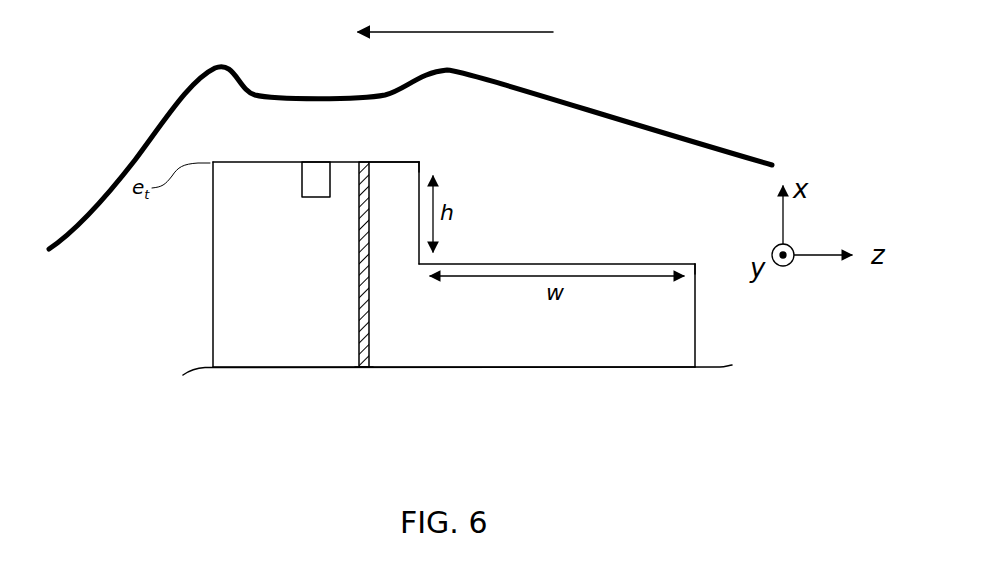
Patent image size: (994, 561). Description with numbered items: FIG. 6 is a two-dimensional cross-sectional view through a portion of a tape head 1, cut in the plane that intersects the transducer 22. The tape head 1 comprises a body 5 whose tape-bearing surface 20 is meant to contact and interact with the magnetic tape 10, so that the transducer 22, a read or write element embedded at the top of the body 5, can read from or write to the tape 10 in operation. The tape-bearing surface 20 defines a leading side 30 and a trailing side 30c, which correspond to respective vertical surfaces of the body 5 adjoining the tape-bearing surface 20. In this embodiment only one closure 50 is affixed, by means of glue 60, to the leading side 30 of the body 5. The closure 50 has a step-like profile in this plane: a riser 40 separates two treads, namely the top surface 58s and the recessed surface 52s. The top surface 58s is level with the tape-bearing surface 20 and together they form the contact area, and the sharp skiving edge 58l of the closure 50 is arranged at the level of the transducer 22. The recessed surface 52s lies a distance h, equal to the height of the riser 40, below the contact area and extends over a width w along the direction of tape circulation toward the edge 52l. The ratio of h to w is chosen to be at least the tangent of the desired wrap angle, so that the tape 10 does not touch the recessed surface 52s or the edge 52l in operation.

The tape head 1 is at (665, 413).
The body 5 is at (267, 372).
The tape 10 is at (612, 110).
The tape-bearing surface 20 is at (258, 162).
The transducer 22 is at (318, 178).
The leading side 30 is at (372, 312).
The trailing side 30c is at (206, 250).
The riser 40 is at (417, 205).
The closure 50 is at (677, 334).
The recessed surface 52s is at (597, 262).
The edge 52l is at (696, 263).
The top surface 58s is at (403, 160).
The skiving edge 58l is at (422, 162).
The glue 60 is at (365, 370).